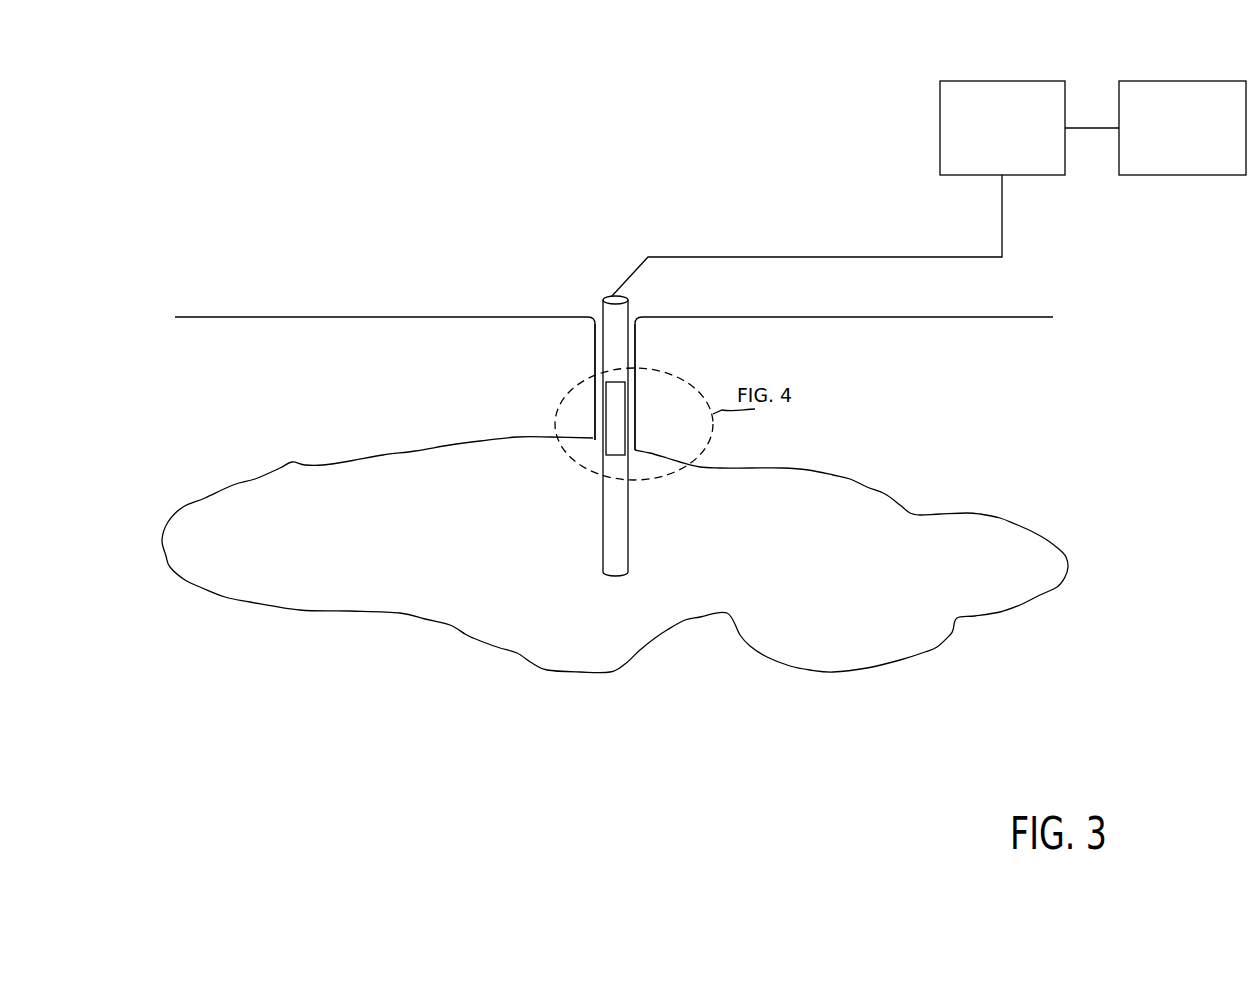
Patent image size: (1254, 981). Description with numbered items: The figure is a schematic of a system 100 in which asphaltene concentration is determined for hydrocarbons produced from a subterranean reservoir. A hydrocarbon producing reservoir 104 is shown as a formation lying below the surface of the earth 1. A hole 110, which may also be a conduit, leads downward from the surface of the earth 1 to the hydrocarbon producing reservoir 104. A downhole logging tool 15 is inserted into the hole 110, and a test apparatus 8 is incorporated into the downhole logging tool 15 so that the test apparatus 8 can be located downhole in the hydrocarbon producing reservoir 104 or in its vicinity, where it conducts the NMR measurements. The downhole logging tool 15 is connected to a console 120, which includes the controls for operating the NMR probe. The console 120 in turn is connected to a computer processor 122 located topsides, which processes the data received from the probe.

The system 100 is at (238, 158).
The surface of the earth 1 is at (410, 313).
The downhole logging tool 15 is at (607, 301).
The hole 110 is at (597, 354).
The test apparatus 8 is at (613, 419).
The hydrocarbon producing reservoir 104 is at (863, 589).
The console 120 is at (1019, 139).
The computer processor 122 is at (1199, 139).